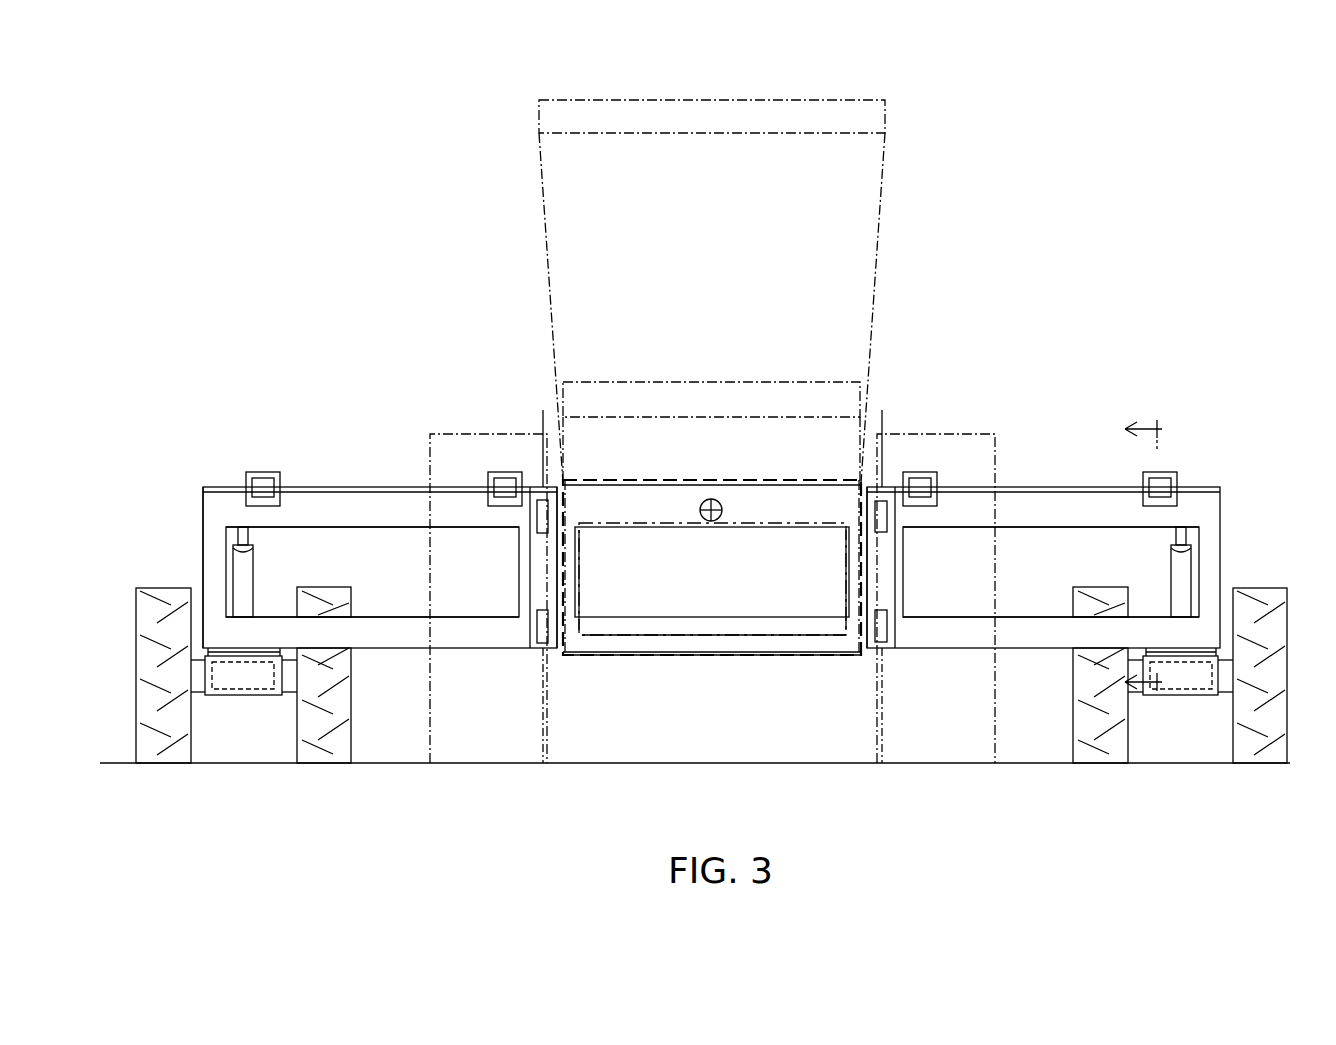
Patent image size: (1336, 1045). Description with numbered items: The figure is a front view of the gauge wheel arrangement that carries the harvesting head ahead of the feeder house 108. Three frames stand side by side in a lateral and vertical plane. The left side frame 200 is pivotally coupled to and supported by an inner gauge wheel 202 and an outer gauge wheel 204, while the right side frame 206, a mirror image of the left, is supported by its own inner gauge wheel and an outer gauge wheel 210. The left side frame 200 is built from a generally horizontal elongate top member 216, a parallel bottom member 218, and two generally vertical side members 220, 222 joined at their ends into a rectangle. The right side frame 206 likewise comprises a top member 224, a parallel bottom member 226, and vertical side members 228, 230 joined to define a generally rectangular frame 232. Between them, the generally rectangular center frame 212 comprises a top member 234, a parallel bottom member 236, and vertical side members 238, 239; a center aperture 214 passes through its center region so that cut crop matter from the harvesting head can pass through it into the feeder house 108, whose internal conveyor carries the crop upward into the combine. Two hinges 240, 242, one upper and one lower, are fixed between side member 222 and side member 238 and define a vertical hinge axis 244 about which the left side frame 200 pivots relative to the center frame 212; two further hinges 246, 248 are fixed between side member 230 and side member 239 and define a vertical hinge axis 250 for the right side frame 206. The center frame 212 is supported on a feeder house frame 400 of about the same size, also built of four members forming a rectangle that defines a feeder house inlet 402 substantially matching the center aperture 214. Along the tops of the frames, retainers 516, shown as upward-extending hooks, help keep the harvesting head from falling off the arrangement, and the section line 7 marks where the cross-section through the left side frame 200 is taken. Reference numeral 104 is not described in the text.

The section line 7- 7 is at (1145, 555).
The support column 104 is at (445, 434).
The feeder house 108 is at (653, 445).
The left side frame 200 is at (1207, 512).
The inner gauge wheel 202 is at (1082, 587).
The outer gauge wheel 204 is at (1270, 588).
The right side frame 206 is at (210, 513).
The outer gauge wheel 210 is at (155, 588).
The center frame 212 is at (777, 622).
The center aperture 214 is at (630, 555).
The top member 216 is at (1053, 512).
The bottom member 218 is at (1027, 632).
The side member 220 is at (1207, 550).
The side member 222 is at (898, 568).
The top member 224 is at (355, 512).
The bottom member 226 is at (386, 632).
The side member 228 is at (215, 547).
The side member 230 is at (525, 570).
The rectangular frame 232 is at (213, 505).
The top member 234 is at (648, 512).
The bottom member 236 is at (700, 628).
The side member 238 is at (852, 562).
The side member 239 is at (575, 575).
The hinge 240 is at (883, 520).
The hinge 242 is at (877, 620).
The vertical hinge axis 244 is at (882, 710).
The hinge 246 is at (541, 523).
The hinge 248 is at (540, 622).
The vertical hinge axis 250 is at (538, 712).
The feeder house frame 400 is at (832, 490).
The feeder house inlet 402 is at (740, 553).
The retainers 516 is at (258, 478).